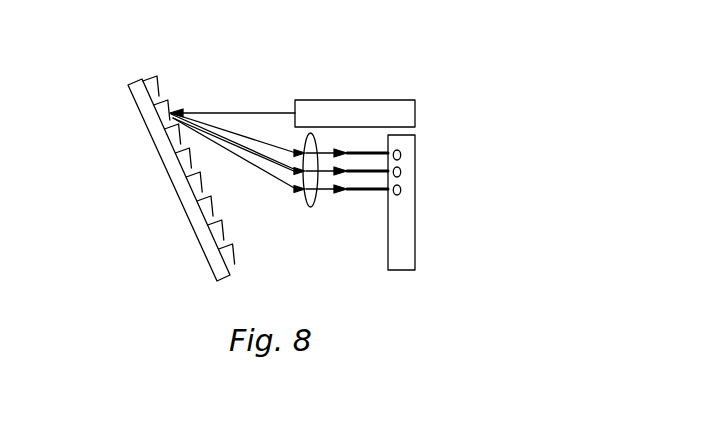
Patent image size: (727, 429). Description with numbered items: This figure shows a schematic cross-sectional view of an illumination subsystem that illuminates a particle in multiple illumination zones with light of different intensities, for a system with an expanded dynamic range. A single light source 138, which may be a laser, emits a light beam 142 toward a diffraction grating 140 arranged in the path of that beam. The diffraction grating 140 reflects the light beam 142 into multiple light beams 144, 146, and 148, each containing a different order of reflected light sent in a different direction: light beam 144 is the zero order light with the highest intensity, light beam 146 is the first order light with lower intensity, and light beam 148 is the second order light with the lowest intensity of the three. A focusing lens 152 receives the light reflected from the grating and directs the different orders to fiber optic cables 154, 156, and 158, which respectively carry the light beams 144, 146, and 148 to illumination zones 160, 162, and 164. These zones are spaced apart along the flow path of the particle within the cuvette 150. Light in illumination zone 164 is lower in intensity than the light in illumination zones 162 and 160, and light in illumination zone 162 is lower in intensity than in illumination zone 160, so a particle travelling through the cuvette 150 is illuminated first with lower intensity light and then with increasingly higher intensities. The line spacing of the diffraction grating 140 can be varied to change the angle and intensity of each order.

The single light source 138 is at (360, 100).
The diffraction grating 140 is at (133, 86).
The light beam 142 is at (283, 112).
The light beam 144 is at (262, 144).
The light beam 146 is at (287, 150).
The light beam 148 is at (288, 181).
The cuvette 150 is at (412, 256).
The focusing lens 152 is at (308, 207).
The fiber optic cable 154 is at (378, 153).
The fiber optic cable 156 is at (377, 173).
The fiber optic cable 158 is at (360, 191).
The illumination zone 160 is at (400, 152).
The illumination zone 162 is at (400, 170).
The illumination zone 164 is at (401, 189).